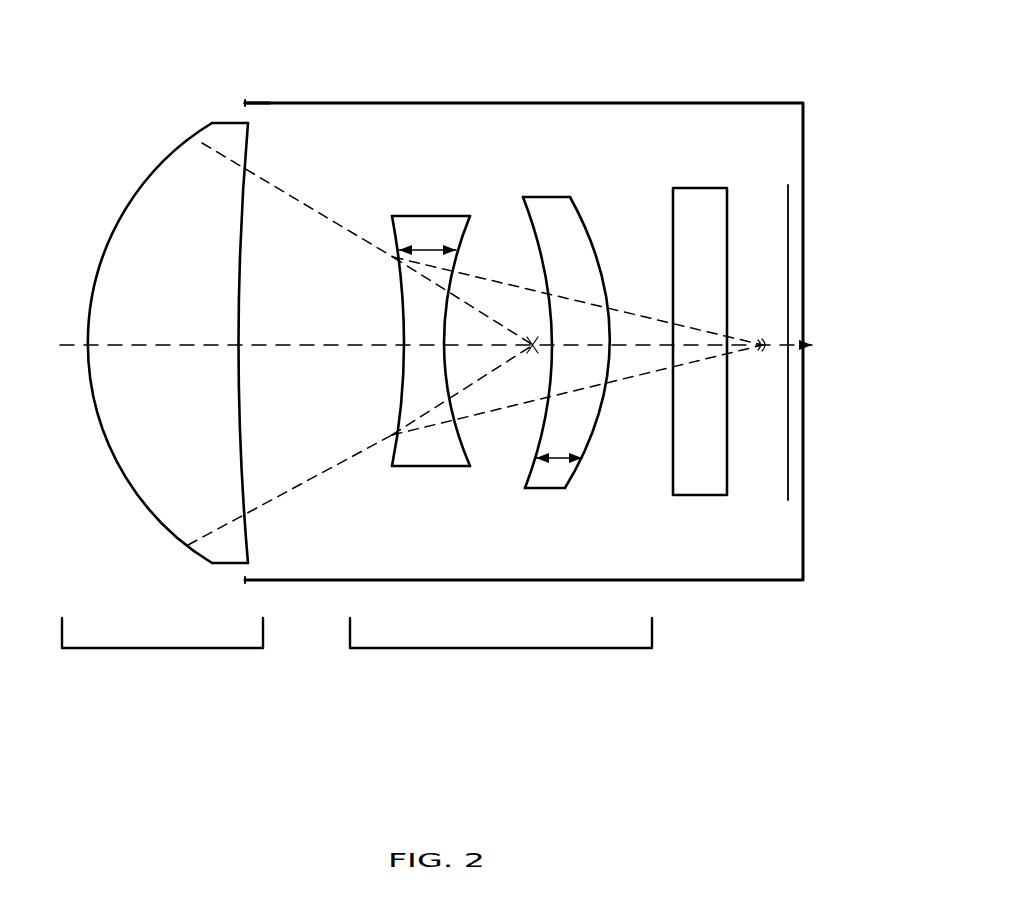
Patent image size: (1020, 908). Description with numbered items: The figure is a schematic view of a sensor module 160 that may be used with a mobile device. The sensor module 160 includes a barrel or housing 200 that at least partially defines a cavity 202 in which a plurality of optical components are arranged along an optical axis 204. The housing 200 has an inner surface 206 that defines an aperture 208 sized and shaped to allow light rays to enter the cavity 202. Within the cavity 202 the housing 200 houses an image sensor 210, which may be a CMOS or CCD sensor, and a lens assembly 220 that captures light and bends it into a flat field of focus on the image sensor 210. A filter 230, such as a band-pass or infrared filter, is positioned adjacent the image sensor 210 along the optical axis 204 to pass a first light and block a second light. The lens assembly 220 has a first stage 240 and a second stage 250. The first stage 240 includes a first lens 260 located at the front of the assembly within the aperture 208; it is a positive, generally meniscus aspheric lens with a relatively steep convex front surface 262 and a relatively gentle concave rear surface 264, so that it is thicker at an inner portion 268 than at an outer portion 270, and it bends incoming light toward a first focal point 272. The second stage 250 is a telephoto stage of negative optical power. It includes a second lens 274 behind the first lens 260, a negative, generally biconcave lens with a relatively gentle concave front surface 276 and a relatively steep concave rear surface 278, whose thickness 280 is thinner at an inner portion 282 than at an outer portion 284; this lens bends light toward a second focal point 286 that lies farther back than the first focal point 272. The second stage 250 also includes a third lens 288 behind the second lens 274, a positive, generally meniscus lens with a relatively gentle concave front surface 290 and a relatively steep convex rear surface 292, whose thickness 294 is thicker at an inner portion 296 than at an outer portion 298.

The sensor module 160 is at (654, 59).
The housing 200 is at (557, 102).
The cavity 202 is at (393, 173).
The optical axis 204 is at (297, 345).
The inner surface 206 is at (252, 108).
The aperture 208 is at (259, 277).
The image sensor 210 is at (788, 223).
The lens assembly 220 is at (538, 548).
The filter 230 is at (700, 485).
The first stage 240 is at (158, 659).
The second stage 250 is at (509, 659).
The first lens 260 is at (197, 543).
The front surface 262 is at (162, 522).
The rear surface 264 is at (238, 422).
The inner portion 268 is at (151, 321).
The outer portion 270 is at (184, 153).
The first focal point 272 is at (537, 344).
The second lens 274 is at (425, 465).
The front surface 276 is at (403, 366).
The rear surface 278 is at (452, 368).
The thickness 280 is at (427, 237).
The inner portion 282 is at (412, 321).
The outer portion 284 is at (452, 449).
The second focal point 286 is at (763, 352).
The third lens 288 is at (537, 483).
The front surface 290 is at (541, 412).
The rear surface 292 is at (612, 408).
The thickness 294 is at (560, 445).
The inner portion 296 is at (595, 358).
The outer portion 298 is at (559, 212).